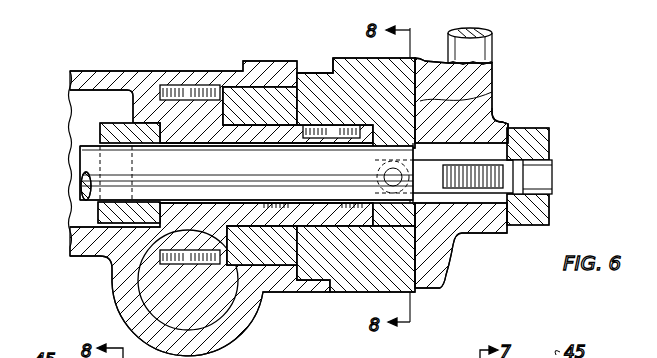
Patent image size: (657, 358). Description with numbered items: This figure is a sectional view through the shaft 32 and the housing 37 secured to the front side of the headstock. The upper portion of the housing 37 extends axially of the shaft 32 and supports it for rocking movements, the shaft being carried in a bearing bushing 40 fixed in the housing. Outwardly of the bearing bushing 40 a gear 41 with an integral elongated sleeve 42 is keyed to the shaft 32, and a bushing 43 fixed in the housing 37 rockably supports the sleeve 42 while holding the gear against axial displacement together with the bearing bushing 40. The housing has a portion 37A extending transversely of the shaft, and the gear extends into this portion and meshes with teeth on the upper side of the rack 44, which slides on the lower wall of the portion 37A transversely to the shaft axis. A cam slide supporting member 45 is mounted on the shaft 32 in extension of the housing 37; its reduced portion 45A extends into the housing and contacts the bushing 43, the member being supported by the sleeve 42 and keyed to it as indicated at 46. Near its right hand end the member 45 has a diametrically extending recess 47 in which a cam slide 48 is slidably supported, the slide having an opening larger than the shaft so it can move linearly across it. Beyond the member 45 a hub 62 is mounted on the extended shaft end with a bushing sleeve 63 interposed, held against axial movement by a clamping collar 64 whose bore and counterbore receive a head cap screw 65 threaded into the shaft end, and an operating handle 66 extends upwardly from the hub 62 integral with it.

The shaft 32 is at (78, 160).
The housing 37 is at (100, 77).
The housing portion 37A is at (220, 333).
The bearing bushing 40 is at (107, 127).
The gear 41 is at (190, 90).
The sleeve 42 is at (243, 137).
The bushing 43 is at (248, 100).
The rack 44 is at (117, 283).
The cam slide supporting member 45 is at (363, 287).
The reduced portion 45A is at (313, 83).
The key 46 is at (331, 137).
The recess 47 is at (382, 90).
The cam slide 48 is at (492, 85).
The hub 62 is at (458, 235).
The bushing sleeve 63 is at (505, 118).
The clamping collar 64 is at (543, 133).
The head cap screw 65 is at (557, 174).
The operating handle 66 is at (492, 33).